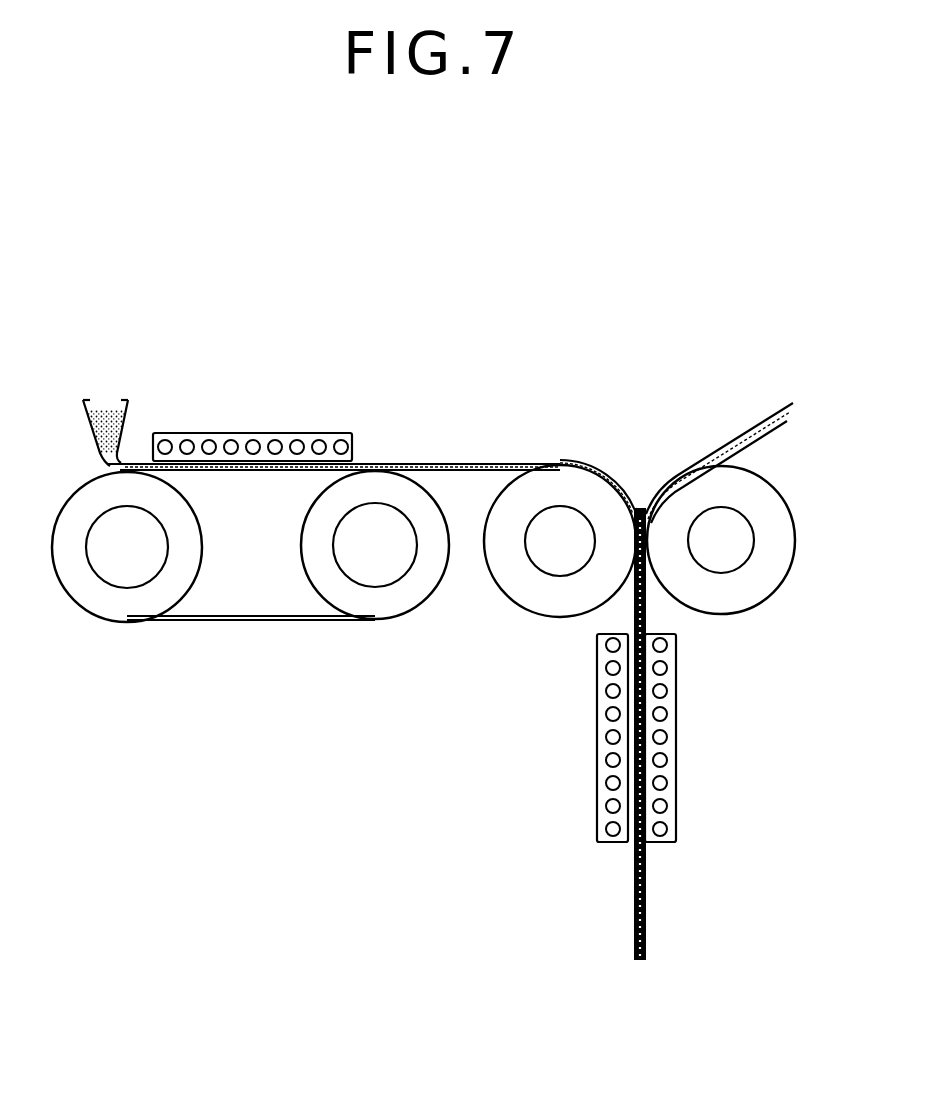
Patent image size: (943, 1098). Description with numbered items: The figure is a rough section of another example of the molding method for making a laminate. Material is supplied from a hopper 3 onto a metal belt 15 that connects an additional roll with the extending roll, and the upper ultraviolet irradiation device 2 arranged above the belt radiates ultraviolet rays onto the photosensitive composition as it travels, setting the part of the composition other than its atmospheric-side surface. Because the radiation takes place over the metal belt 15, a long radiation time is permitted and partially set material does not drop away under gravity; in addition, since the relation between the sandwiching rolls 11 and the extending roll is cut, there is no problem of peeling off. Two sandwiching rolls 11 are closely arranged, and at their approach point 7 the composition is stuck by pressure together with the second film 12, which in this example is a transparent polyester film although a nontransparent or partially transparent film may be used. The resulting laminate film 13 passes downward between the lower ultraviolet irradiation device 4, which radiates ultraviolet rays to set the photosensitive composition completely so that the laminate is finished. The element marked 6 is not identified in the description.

The upper ultraviolet irradiation device 2 is at (302, 433).
The hopper 3 is at (128, 401).
The lower ultraviolet irradiation device 4 is at (613, 807).
The powdery material 6 is at (104, 410).
The approach point 7 is at (643, 503).
The sandwiching rolls 11 is at (402, 598).
The second film 12 is at (748, 427).
The laminate film 13 is at (634, 607).
The metal belt 15 is at (223, 621).